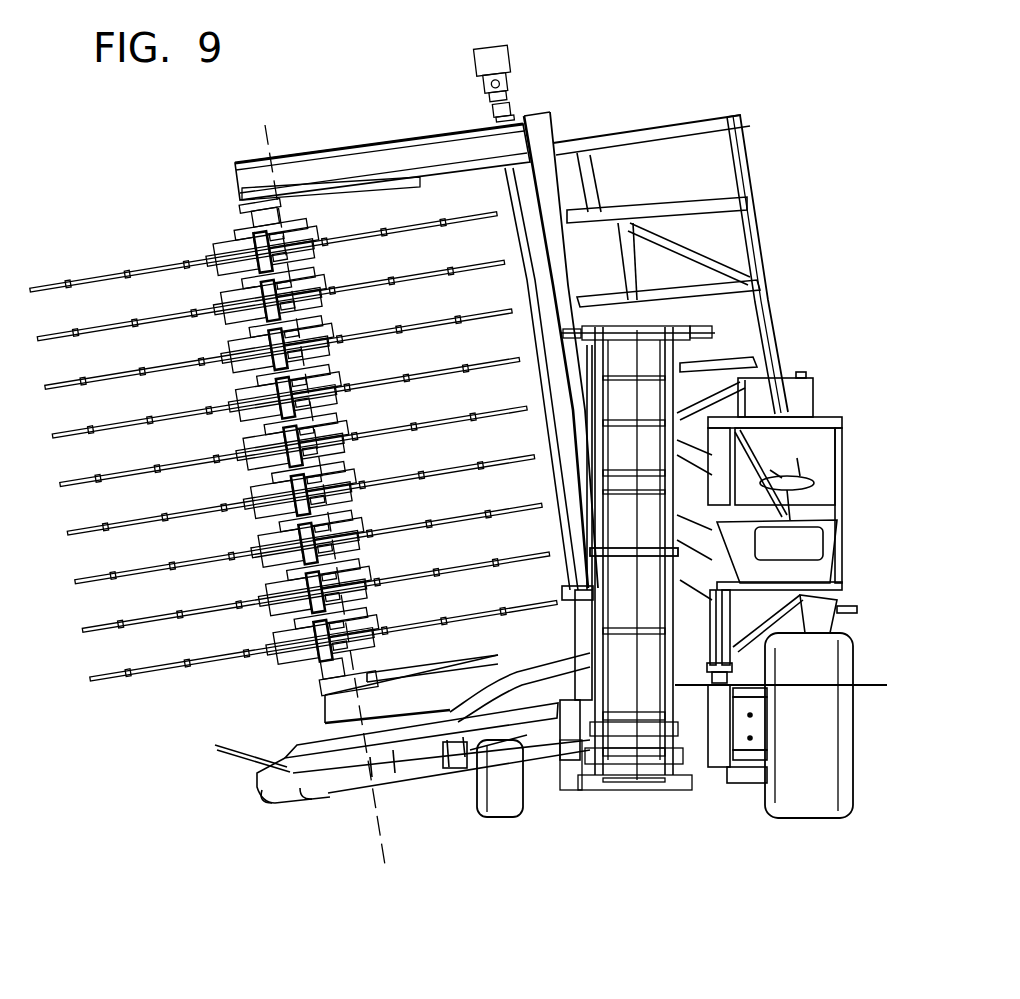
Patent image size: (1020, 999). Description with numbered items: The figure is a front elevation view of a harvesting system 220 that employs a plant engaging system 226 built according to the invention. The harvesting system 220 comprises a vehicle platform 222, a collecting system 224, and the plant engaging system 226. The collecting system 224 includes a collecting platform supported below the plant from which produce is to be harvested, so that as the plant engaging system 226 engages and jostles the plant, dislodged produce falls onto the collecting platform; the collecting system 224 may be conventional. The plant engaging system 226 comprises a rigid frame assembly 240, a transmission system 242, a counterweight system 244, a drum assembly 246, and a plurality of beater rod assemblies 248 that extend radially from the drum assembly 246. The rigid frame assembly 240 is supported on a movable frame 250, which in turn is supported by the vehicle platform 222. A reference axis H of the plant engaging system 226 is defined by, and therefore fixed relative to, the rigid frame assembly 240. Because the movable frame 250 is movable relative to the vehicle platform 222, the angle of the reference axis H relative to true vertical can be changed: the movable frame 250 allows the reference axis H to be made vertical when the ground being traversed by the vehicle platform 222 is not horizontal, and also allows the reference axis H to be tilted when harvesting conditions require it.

The harvesting system 220 is at (737, 58).
The vehicle platform 222 is at (814, 362).
The collecting system 224 is at (333, 830).
The plant engaging system 226 is at (130, 198).
The rigid frame assembly 240 is at (596, 112).
The transmission system 242 is at (537, 60).
The counterweight system 244 is at (434, 192).
The drum assembly 246 is at (225, 208).
The beater rod assemblies 248 is at (168, 243).
The movable frame 250 is at (760, 180).
The reference axis H is at (265, 147).